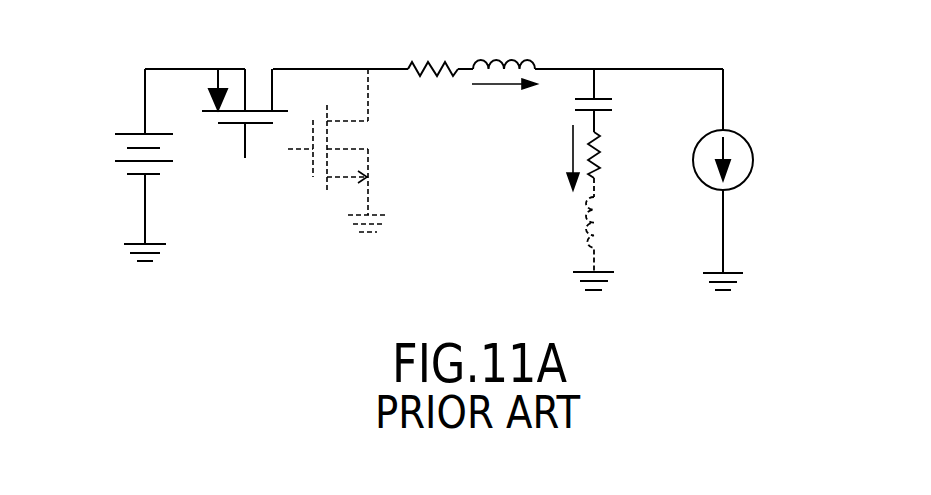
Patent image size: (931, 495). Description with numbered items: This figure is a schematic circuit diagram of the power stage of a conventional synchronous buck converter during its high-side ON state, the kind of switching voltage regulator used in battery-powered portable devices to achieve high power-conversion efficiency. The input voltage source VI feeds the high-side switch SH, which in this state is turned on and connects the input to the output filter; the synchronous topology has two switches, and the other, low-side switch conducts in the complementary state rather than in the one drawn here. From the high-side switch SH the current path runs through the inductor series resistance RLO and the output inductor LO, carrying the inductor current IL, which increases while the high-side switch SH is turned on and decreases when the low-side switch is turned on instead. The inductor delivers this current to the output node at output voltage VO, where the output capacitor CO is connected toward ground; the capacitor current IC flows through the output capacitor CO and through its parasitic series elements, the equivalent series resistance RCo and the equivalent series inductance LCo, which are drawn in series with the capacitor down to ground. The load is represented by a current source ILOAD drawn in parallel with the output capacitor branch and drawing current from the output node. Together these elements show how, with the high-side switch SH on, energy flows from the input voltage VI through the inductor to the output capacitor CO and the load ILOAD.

The input voltage source VI is at (127, 165).
The high-side switch SH is at (239, 114).
The output inductor series resistance RLO is at (433, 50).
The output inductor LO is at (504, 47).
The inductor current IL is at (504, 96).
The output voltage node VO is at (593, 63).
The output capacitor CO is at (615, 110).
The capacitor current IC is at (562, 157).
The output capacitor equivalent series resistance RCo is at (622, 164).
The output capacitor equivalent series inductance LCo is at (614, 243).
The load current source ILOAD is at (757, 179).